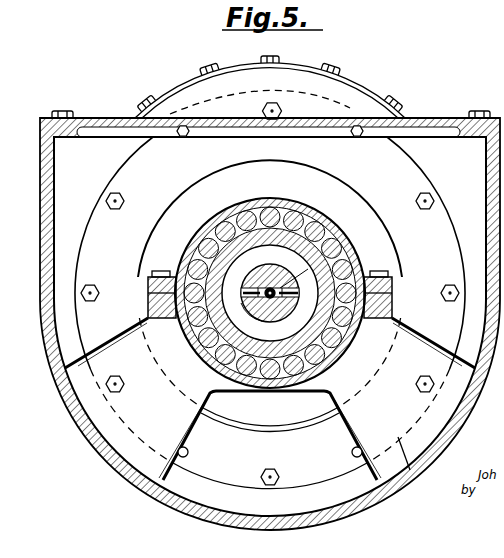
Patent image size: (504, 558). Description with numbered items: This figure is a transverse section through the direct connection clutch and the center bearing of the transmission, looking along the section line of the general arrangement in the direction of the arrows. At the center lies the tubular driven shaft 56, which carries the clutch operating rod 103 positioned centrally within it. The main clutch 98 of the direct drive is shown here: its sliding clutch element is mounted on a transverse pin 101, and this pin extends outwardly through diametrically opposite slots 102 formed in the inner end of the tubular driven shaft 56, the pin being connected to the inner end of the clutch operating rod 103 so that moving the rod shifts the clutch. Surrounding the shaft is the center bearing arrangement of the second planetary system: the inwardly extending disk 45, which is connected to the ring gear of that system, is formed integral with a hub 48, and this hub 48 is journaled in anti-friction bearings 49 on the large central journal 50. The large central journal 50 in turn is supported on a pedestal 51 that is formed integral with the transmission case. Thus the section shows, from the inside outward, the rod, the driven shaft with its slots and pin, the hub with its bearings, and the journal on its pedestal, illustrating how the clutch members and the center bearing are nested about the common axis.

The inwardly extending disk 45 is at (425, 228).
The hub 48 is at (276, 230).
The anti-friction bearings 49 is at (317, 224).
The transverse pin 101 is at (341, 239).
The tubular driven shaft 56 is at (279, 308).
The slots 102 is at (270, 287).
The clutch operating rod 103 is at (261, 281).
The main clutch 98 is at (246, 317).
The large central journal 50 is at (288, 393).
The pedestal 51 is at (398, 437).